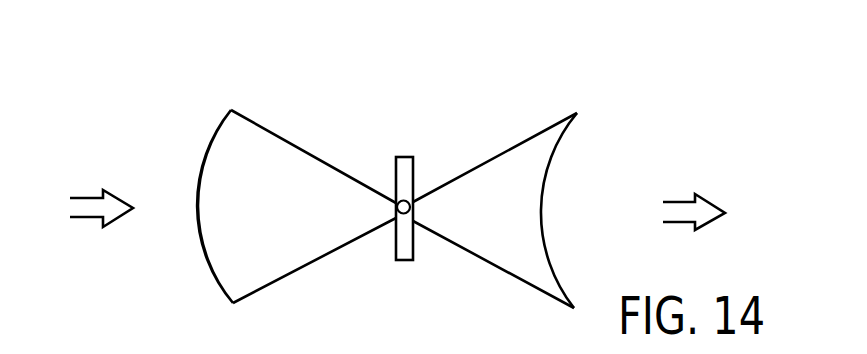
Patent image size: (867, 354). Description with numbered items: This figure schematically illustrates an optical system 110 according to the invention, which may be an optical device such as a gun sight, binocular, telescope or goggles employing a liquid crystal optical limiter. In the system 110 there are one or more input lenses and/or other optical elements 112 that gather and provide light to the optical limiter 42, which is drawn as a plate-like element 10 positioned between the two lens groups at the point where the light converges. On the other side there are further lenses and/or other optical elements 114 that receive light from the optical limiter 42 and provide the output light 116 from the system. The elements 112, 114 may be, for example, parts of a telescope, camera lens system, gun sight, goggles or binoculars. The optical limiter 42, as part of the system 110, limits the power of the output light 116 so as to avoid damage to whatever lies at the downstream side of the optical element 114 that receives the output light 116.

The optical system 110 is at (371, 116).
The input lenses and/or other optical elements 112 is at (230, 282).
The further lenses and/or other optical elements 114 is at (582, 140).
The aperture plate 10 is at (403, 165).
The optical limiter 42 is at (87, 210).
The output light 116 is at (677, 213).